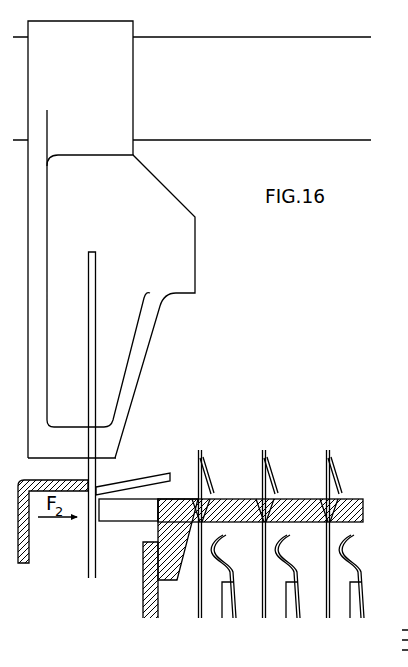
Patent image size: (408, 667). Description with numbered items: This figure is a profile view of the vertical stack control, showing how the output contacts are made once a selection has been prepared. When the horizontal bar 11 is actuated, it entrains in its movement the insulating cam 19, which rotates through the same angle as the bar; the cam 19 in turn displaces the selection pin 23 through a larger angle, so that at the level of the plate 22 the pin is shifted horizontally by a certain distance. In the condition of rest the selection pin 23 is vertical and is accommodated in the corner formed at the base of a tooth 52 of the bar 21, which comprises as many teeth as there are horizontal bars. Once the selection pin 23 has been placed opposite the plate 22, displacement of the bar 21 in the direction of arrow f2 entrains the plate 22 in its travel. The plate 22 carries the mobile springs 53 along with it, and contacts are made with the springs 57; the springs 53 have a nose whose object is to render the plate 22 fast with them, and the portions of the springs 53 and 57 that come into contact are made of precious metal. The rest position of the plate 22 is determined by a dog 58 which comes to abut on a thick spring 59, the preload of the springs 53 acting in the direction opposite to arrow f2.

The horizontal bar 11 is at (202, 45).
The insulating cam 19 is at (183, 264).
The bar 21 is at (31, 529).
The plate 22 is at (286, 503).
The selection pin 23 is at (96, 362).
The tooth 52 is at (143, 470).
The mobile spring 53 is at (201, 454).
The spring 57 is at (227, 564).
The dog 58 is at (160, 531).
The thick spring 59 is at (143, 578).